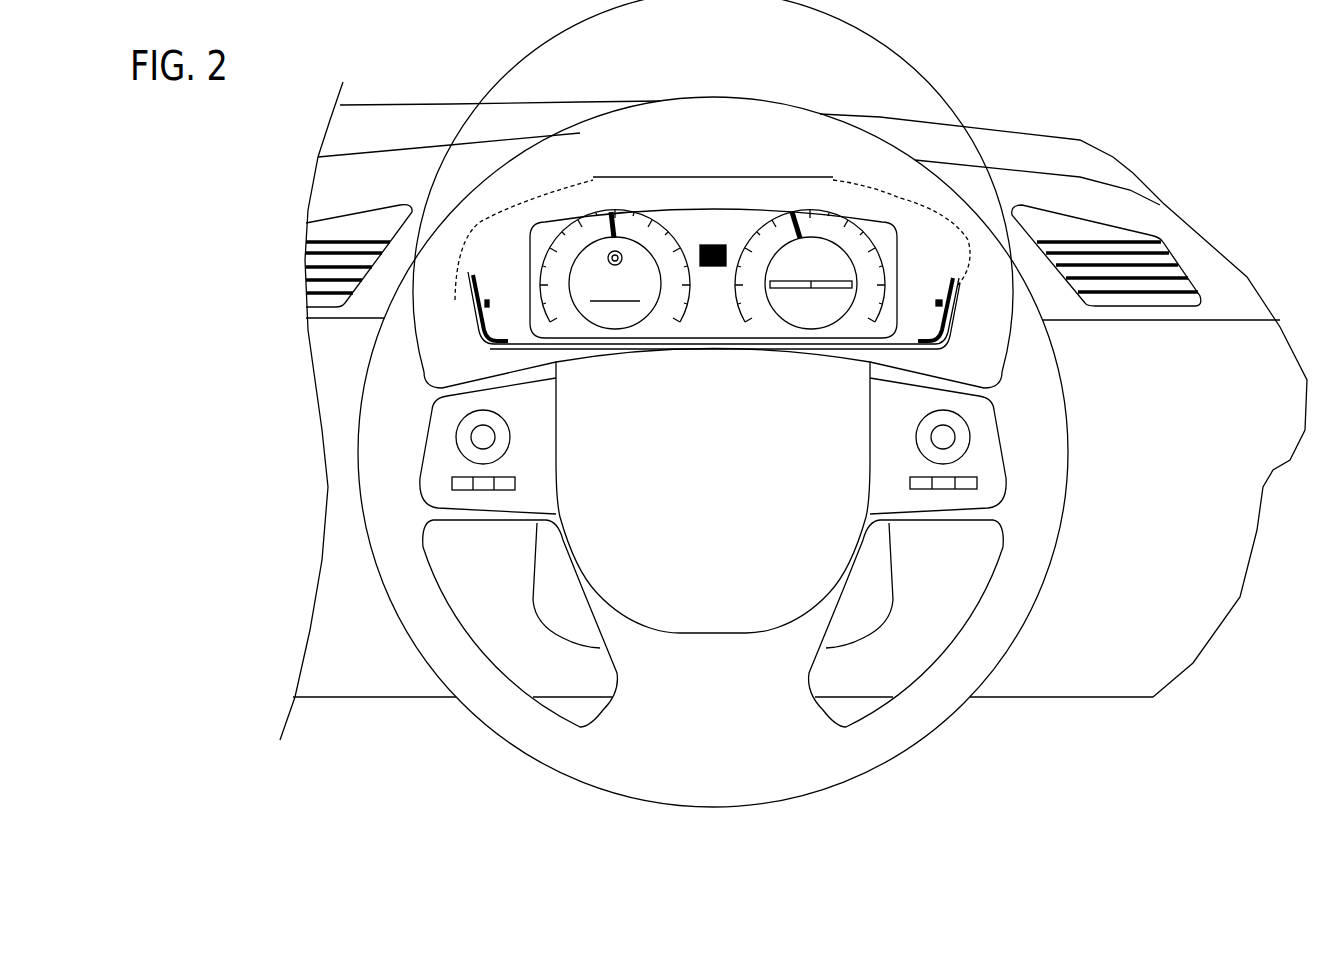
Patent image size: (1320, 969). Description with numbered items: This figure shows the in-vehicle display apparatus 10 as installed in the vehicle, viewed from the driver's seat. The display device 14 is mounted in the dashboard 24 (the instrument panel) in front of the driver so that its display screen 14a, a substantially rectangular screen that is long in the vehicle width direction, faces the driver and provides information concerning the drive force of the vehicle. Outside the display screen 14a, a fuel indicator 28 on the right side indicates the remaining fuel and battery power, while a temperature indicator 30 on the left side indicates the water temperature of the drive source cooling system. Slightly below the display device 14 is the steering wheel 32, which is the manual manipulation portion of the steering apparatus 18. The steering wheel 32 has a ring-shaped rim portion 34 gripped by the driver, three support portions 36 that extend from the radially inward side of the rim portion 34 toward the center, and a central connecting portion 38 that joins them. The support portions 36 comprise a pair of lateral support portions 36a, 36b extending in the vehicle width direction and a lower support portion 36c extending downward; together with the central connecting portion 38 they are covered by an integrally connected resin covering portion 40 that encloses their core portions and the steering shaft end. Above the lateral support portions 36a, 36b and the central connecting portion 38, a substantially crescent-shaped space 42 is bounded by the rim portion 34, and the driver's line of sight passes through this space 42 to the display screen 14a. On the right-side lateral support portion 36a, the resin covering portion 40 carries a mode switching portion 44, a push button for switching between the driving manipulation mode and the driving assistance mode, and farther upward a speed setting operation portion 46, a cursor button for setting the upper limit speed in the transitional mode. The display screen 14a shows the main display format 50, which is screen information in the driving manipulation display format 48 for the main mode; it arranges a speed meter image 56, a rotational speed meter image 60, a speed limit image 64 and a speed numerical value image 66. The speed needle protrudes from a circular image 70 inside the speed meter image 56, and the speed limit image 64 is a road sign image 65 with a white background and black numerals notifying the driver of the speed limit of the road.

The in-vehicle display apparatus 10 is at (737, 234).
The display device 14 is at (737, 234).
The display screen 14a is at (737, 234).
The steering apparatus 18 is at (740, 414).
The dashboard 24 is at (462, 125).
The fuel indicator 28 is at (960, 293).
The temperature indicator 30 is at (478, 322).
The steering wheel 32 is at (740, 414).
The rim portion 34 is at (1013, 607).
The support portions 36 is at (787, 713).
The right-side lateral support portion 36a is at (961, 493).
The lateral support portion 36b is at (497, 517).
The lower support portion 36c is at (713, 674).
The central connecting portion 38 is at (672, 558).
The resin covering portion 40 is at (996, 492).
The space 42 is at (918, 240).
The mode switching portion 44 is at (943, 490).
The speed setting operation portion 46 is at (970, 440).
The driving manipulation display format 48 is at (715, 270).
The main display format 50 is at (715, 270).
The speed meter image 56 is at (760, 323).
The rotational speed meter image 60 is at (567, 323).
The speed limit image 64 is at (711, 289).
The road sign image 65 is at (714, 267).
The speed numerical value image 66 is at (715, 207).
The circular image 70 is at (593, 240).